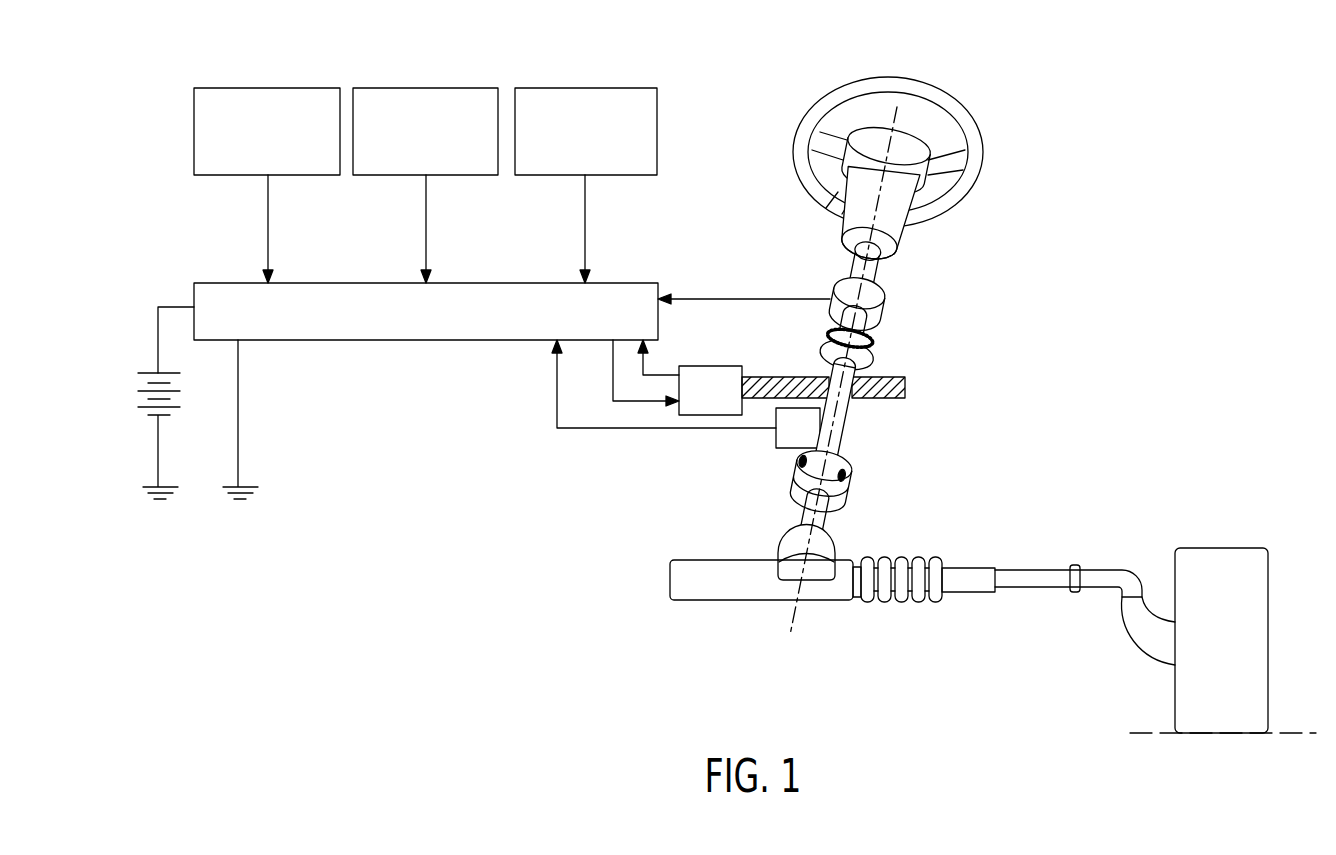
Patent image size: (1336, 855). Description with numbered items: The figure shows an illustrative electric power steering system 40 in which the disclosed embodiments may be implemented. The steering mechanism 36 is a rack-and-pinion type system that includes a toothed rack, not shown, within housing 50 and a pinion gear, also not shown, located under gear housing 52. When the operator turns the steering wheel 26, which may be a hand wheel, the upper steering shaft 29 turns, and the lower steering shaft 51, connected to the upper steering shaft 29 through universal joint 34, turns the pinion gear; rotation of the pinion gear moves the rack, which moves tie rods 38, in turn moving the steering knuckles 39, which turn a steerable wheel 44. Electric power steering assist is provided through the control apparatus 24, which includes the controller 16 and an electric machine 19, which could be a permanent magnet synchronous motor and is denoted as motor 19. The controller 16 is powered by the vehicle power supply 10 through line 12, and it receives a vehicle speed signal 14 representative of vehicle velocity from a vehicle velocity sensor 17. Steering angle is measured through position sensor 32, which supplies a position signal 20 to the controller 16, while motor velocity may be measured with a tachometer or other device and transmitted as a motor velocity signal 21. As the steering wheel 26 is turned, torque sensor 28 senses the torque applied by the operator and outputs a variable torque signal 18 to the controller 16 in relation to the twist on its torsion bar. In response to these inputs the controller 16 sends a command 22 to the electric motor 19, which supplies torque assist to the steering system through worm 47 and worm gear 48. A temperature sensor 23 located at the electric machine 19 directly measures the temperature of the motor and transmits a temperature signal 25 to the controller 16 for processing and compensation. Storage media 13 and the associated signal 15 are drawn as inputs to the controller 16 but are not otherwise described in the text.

The vehicle power supply 10 is at (137, 392).
The line 12 is at (173, 305).
The storage media 13 is at (268, 86).
The vehicle speed signal 14 is at (424, 211).
The storage media signal 15 is at (266, 212).
The controller 16 is at (397, 343).
The vehicle velocity sensor 17 is at (427, 86).
The variable torque signal 18 is at (752, 295).
The electric machine 19 is at (720, 365).
The position signal 20 is at (668, 430).
The motor velocity signal 21 is at (668, 373).
The command 22 is at (628, 405).
The temperature sensor 23 is at (585, 86).
The control apparatus 24 is at (1066, 283).
The temperature signal 25 is at (583, 205).
The steering wheel 26 is at (935, 106).
The torque sensor 28 is at (877, 300).
The upper steering shaft 29 is at (848, 273).
The position sensor 32 is at (775, 440).
The universal joint 34 is at (845, 473).
The steering mechanism 36 is at (934, 541).
The tie rod 38 is at (1030, 578).
The steering knuckle 39 is at (1143, 627).
The electric power steering system 40 is at (1143, 374).
The steerable wheel 44 is at (1210, 560).
The worm 47 is at (897, 392).
The worm gear 48 is at (857, 353).
The housing 50 is at (707, 590).
The lower steering shaft 51 is at (823, 520).
The gear housing 52 is at (790, 545).